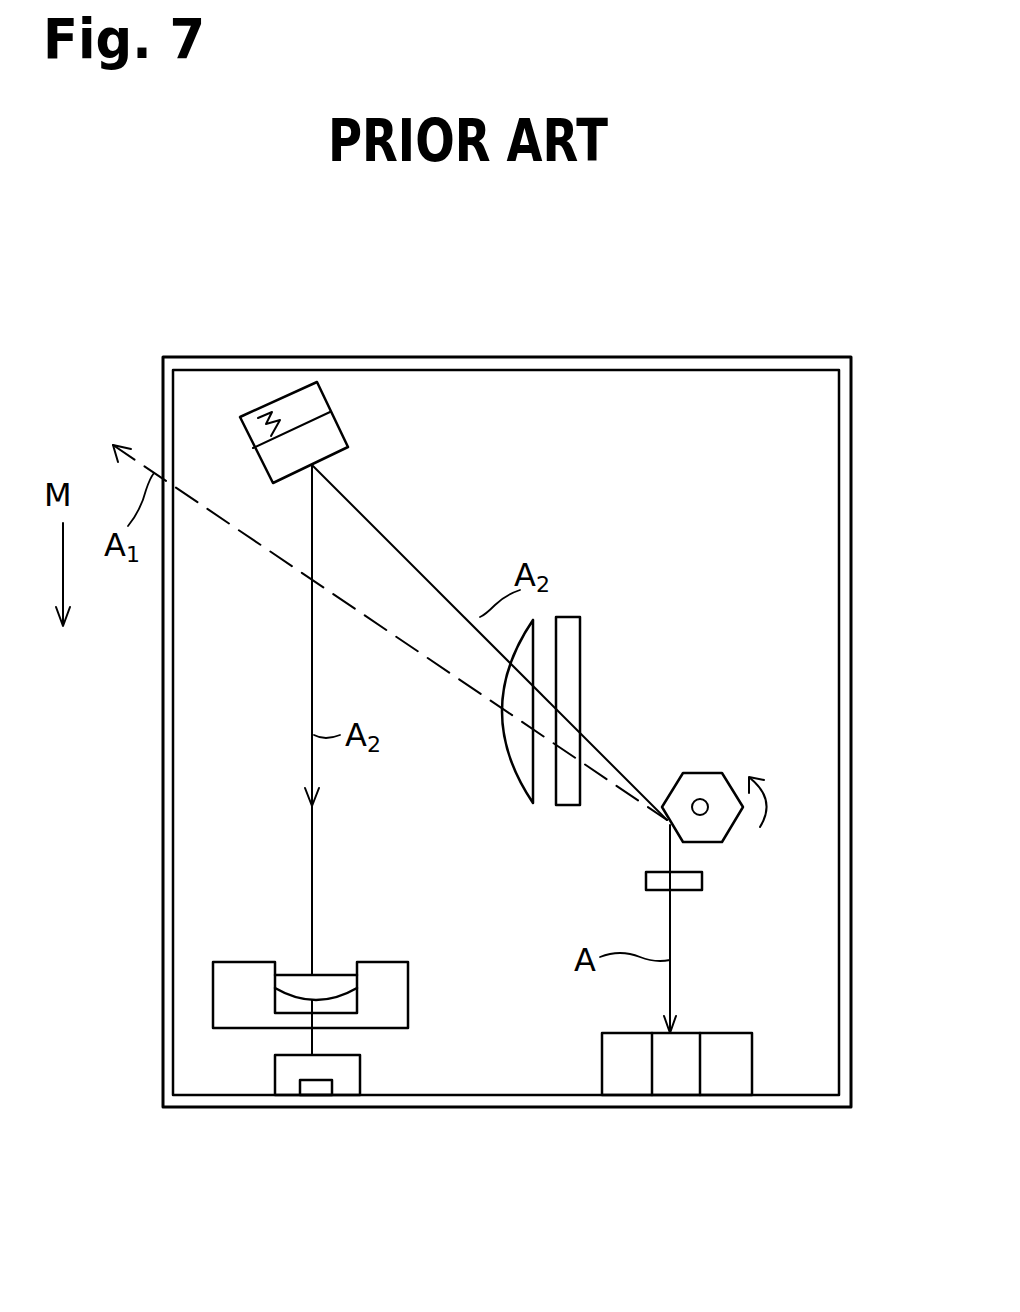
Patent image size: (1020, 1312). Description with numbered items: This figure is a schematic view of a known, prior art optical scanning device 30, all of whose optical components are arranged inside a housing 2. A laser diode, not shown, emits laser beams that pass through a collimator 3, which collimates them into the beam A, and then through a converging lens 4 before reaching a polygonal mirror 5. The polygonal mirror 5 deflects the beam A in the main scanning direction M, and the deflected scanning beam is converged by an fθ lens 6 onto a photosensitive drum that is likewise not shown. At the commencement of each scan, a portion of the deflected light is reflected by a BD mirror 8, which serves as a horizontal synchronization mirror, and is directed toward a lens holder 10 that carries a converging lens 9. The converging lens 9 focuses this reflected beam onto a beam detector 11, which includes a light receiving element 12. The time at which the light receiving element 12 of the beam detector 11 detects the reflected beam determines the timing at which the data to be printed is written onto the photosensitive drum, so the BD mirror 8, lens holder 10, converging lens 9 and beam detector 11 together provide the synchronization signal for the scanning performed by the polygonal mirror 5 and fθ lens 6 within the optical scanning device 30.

The housing 2 is at (852, 463).
The collimator 3 is at (686, 1033).
The converging lens 4 is at (702, 880).
The polygonal mirror 5 is at (700, 773).
The fθ lens 6 is at (592, 632).
The BD mirror 8 is at (333, 457).
The converging lens 9 is at (330, 970).
The lens holder 10 is at (383, 961).
The beam detector 11 is at (360, 1070).
The light receiving element 12 is at (330, 1086).
The optical scanning device 30 is at (593, 330).